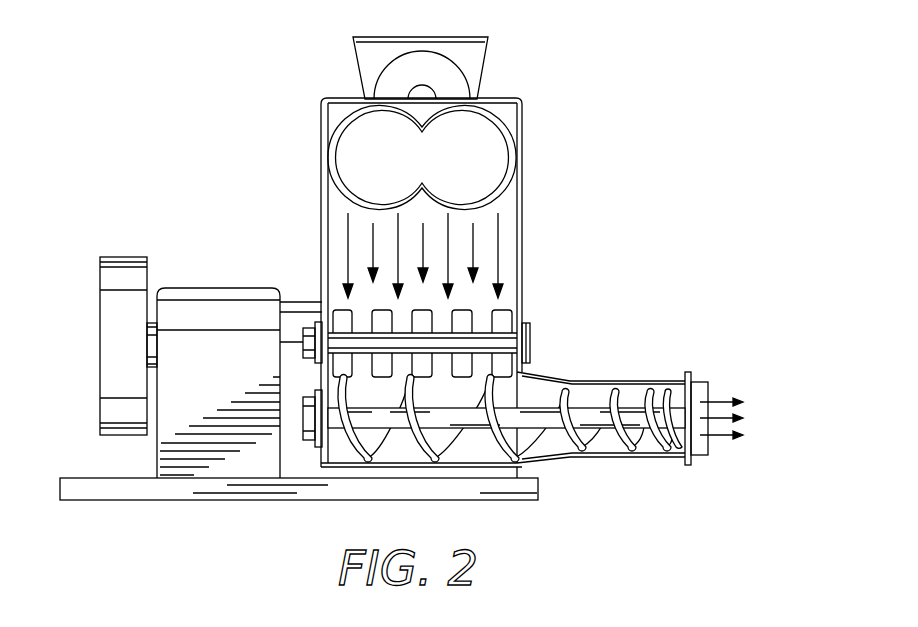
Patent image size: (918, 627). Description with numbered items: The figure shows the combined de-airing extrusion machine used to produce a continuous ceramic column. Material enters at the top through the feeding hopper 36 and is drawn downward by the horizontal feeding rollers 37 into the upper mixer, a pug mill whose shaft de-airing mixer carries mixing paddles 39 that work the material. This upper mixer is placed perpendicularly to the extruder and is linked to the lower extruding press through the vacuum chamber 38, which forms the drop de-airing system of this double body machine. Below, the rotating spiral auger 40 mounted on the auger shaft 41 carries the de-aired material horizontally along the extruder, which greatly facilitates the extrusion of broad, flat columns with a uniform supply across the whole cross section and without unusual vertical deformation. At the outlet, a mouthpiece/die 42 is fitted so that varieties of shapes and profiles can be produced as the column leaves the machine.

The feeding hopper 36 is at (372, 50).
The horizontal feeding rollers 37 is at (457, 86).
The vacuum chamber 38 is at (482, 163).
The mixing paddles 39 is at (500, 316).
The rotating spiral auger 40 is at (497, 393).
The auger shaft 41 is at (598, 410).
The mouthpiece/die 42 is at (700, 395).